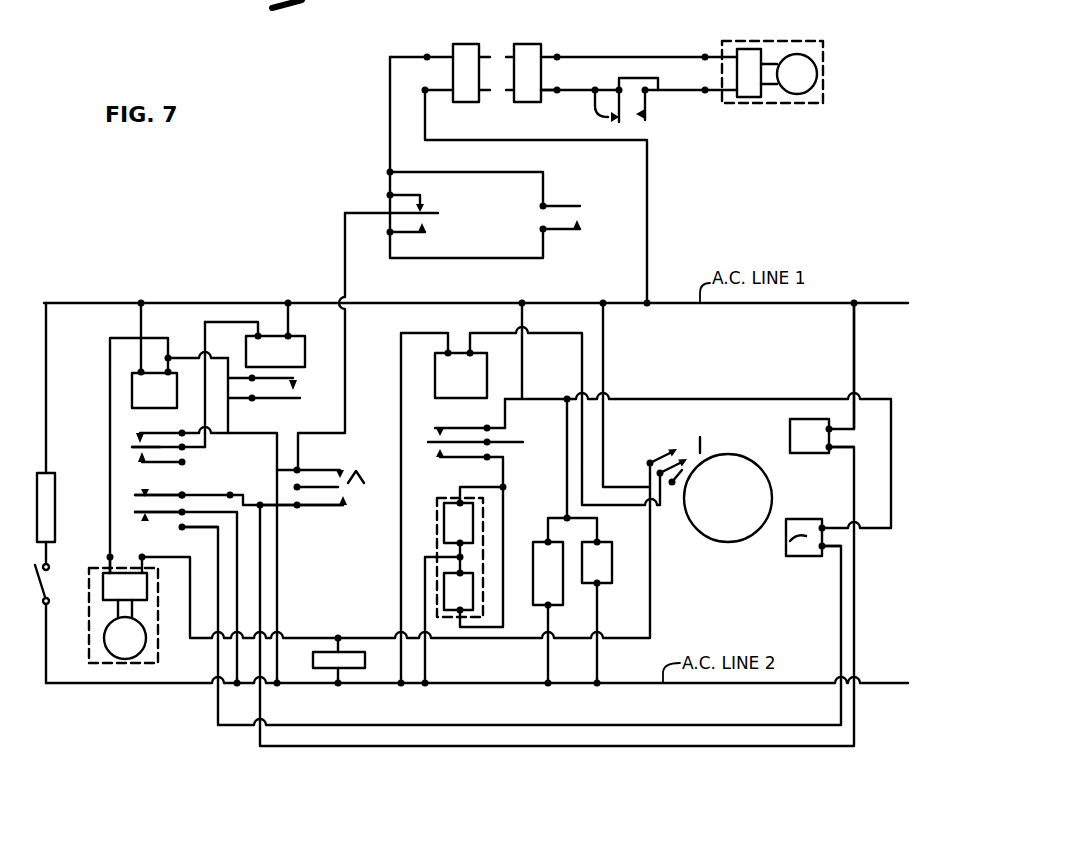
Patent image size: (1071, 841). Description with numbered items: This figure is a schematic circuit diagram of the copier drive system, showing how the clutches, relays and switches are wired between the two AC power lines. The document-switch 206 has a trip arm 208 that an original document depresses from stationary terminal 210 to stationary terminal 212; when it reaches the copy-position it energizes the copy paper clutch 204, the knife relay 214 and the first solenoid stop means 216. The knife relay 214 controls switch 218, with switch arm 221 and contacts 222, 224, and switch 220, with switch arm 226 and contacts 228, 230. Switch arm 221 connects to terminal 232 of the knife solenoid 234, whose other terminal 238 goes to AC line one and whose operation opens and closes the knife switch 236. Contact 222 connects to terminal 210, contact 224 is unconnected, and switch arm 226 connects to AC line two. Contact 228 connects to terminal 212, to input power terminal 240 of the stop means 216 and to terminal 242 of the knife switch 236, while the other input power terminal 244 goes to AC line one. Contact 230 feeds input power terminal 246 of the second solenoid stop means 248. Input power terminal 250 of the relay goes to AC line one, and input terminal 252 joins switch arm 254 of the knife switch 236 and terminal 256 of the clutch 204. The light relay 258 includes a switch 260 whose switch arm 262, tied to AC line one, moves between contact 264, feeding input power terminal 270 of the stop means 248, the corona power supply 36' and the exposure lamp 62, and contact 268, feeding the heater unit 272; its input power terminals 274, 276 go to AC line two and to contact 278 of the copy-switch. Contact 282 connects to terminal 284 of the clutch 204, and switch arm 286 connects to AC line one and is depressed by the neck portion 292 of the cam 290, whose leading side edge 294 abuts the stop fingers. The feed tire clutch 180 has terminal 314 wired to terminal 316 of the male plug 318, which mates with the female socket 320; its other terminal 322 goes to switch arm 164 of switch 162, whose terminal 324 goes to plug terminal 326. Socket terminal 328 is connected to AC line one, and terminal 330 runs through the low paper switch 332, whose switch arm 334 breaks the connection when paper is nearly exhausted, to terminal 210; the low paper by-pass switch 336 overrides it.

The corona power supply 36' is at (538, 553).
The high intensity exposure lamp 62 is at (608, 545).
The switch 162 is at (643, 121).
The switch arm 164 is at (607, 118).
The electrically operated clutch 180 is at (785, 40).
The copy paper clutch 204 is at (127, 665).
The document-switch 206 is at (388, 421).
The trip arm 208 is at (388, 518).
The stationary terminal 210 is at (298, 467).
The stationary terminal 212 is at (296, 508).
The knife relay 214 is at (154, 390).
The first solenoid stop means 216 is at (809, 436).
The switch 218 is at (125, 453).
The switch 220 is at (146, 490).
The switch arm 221 is at (133, 458).
The contact 222 is at (182, 431).
The contact 224 is at (185, 462).
The switch arm 226 is at (145, 501).
The contact 228 is at (181, 493).
The contact 230 is at (185, 530).
The terminal 232 is at (259, 334).
The knife solenoid 234 is at (275, 351).
The knife switch 236 is at (300, 379).
The terminal 238 is at (288, 334).
The input power terminal 240 is at (842, 451).
The terminal 242 is at (251, 401).
The input power terminal 244 is at (850, 399).
The input power terminal 246 is at (826, 549).
The second solenoid stop means 248 is at (790, 541).
The input power terminal 250 is at (139, 372).
The input terminal 252 is at (193, 318).
The switch arm 254 is at (252, 376).
The terminal 256 is at (108, 557).
The light relay 258 is at (461, 375).
The switch 260 is at (424, 443).
The switch arm 262 is at (450, 432).
The contact 264 is at (490, 430).
The contact 268 is at (495, 460).
The input power terminal 270 is at (823, 526).
The heater unit 272 is at (448, 620).
The input power terminal 274 is at (448, 350).
The input power terminal 276 is at (470, 350).
The contact 278 is at (672, 485).
The contact 282 is at (650, 461).
The terminal 284 is at (141, 556).
The switch arm 286 is at (698, 437).
The cam 290 is at (728, 498).
The neck portion 292 is at (730, 453).
The leading side edge 294 is at (745, 415).
The terminal 314 is at (705, 57).
The terminal 316 is at (558, 55).
The male plug 318 is at (547, 13).
The female socket 320 is at (468, 40).
The terminal 322 is at (645, 92).
The terminal 324 is at (595, 88).
The terminal 326 is at (557, 92).
The terminal 328 is at (426, 92).
The terminal 330 is at (427, 57).
The low paper switch 332 is at (390, 228).
The switch arm 334 is at (372, 212).
The low paper by-pass switch 336 is at (565, 206).